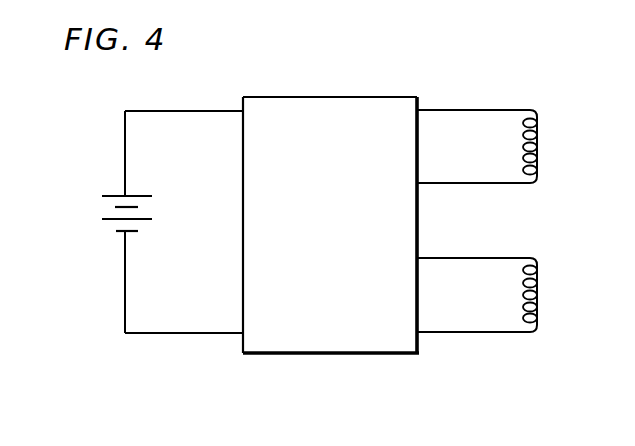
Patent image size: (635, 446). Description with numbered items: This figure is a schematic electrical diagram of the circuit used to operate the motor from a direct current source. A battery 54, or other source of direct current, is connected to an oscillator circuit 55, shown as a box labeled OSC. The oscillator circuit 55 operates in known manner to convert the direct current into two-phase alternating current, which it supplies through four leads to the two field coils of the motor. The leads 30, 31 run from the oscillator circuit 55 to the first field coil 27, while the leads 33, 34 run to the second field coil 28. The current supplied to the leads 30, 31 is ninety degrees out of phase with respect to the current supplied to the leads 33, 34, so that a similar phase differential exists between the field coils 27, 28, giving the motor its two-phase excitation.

The oscillator circuit 55 is at (338, 72).
The battery 54 is at (113, 210).
The lead 30 is at (490, 108).
The lead 31 is at (458, 185).
The field coil 27 is at (540, 142).
The lead 33 is at (488, 257).
The lead 34 is at (480, 334).
The field coil 28 is at (540, 286).